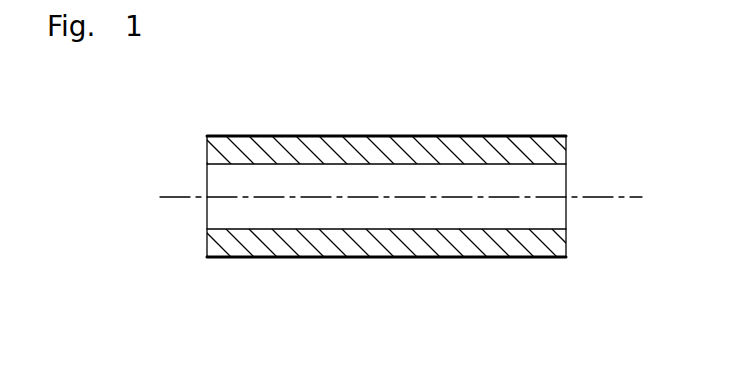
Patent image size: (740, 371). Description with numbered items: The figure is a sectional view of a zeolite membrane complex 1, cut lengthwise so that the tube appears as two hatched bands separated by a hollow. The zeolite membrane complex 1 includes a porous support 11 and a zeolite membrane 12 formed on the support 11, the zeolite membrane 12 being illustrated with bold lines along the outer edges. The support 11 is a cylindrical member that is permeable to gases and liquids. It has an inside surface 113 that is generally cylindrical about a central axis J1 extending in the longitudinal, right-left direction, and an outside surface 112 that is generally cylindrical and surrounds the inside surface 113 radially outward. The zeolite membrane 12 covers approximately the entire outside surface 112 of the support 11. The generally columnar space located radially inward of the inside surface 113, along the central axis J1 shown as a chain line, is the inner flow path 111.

The zeolite membrane complex 1 is at (200, 117).
The support 11 is at (358, 242).
The zeolite membrane 12 is at (455, 258).
The inner flow path 111 is at (542, 176).
The outside surface 112 is at (540, 258).
The inside surface 113 is at (543, 227).
The central axis J1 is at (177, 200).